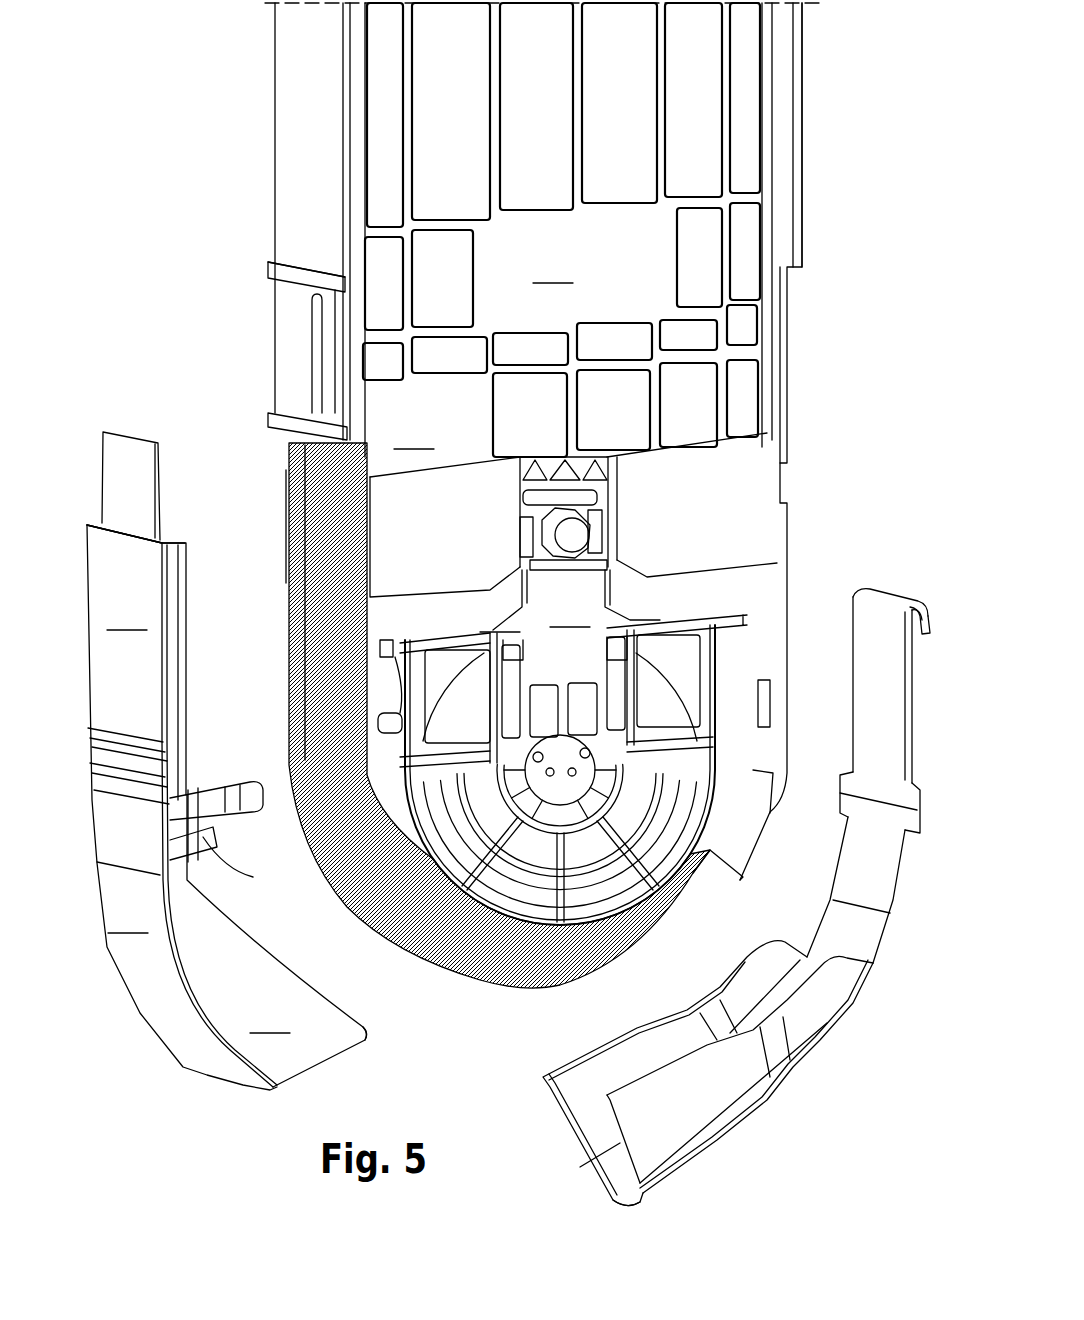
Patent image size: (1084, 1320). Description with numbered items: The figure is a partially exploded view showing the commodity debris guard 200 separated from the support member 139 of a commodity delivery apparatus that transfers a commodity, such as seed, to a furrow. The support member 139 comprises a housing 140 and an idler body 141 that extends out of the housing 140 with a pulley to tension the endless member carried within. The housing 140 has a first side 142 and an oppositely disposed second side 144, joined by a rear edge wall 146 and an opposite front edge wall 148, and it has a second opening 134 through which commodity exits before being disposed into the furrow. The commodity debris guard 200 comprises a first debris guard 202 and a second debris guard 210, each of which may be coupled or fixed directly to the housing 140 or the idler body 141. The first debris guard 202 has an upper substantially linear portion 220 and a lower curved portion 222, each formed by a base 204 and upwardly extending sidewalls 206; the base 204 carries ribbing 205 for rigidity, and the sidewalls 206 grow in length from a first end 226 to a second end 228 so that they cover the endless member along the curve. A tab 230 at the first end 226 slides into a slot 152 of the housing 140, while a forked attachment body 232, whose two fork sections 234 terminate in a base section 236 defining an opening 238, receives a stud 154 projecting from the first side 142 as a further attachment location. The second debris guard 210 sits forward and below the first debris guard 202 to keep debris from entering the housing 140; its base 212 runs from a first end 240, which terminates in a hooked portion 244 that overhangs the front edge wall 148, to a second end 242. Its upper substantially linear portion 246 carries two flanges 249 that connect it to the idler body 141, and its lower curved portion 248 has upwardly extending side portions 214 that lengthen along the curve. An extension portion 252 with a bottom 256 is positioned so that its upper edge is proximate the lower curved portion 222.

The second opening 134 is at (712, 875).
The support member 139 is at (815, 318).
The housing 140 is at (565, 240).
The idler body 141 is at (570, 558).
The first side 142 is at (573, 508).
The second side 144 is at (281, 452).
The rear edge wall 146 is at (290, 207).
The front edge wall 148 is at (802, 117).
The slot 152 is at (277, 437).
The stud 154 is at (392, 650).
The commodity debris guard 200 is at (200, 1121).
The first debris guard 202 is at (86, 828).
The base 204 is at (128, 898).
The ribbing 205 is at (88, 775).
The upwardly extending sidewalls 206 is at (180, 650).
The second debris guard 210 is at (885, 951).
The base 212 is at (873, 720).
The upwardly extending side portions 214 is at (670, 1130).
The upper substantially linear portion 220 is at (124, 578).
The lower curved portion 222 is at (277, 941).
The first end 226 is at (92, 527).
The second end 228 is at (367, 1033).
The tab 230 is at (132, 452).
The forked attachment body 232 is at (240, 777).
The fork sections 234 is at (207, 830).
The base section 236 is at (263, 790).
The opening 238 is at (213, 807).
The first end 240 is at (917, 648).
The second end 242 is at (627, 1200).
The hooked portion 244 is at (928, 590).
The upper substantially linear portion 246 is at (934, 696).
The lower curved portion 248 is at (857, 947).
The flanges 249 is at (840, 793).
The extension portion 252 is at (640, 1143).
The bottom 256 is at (610, 1177).